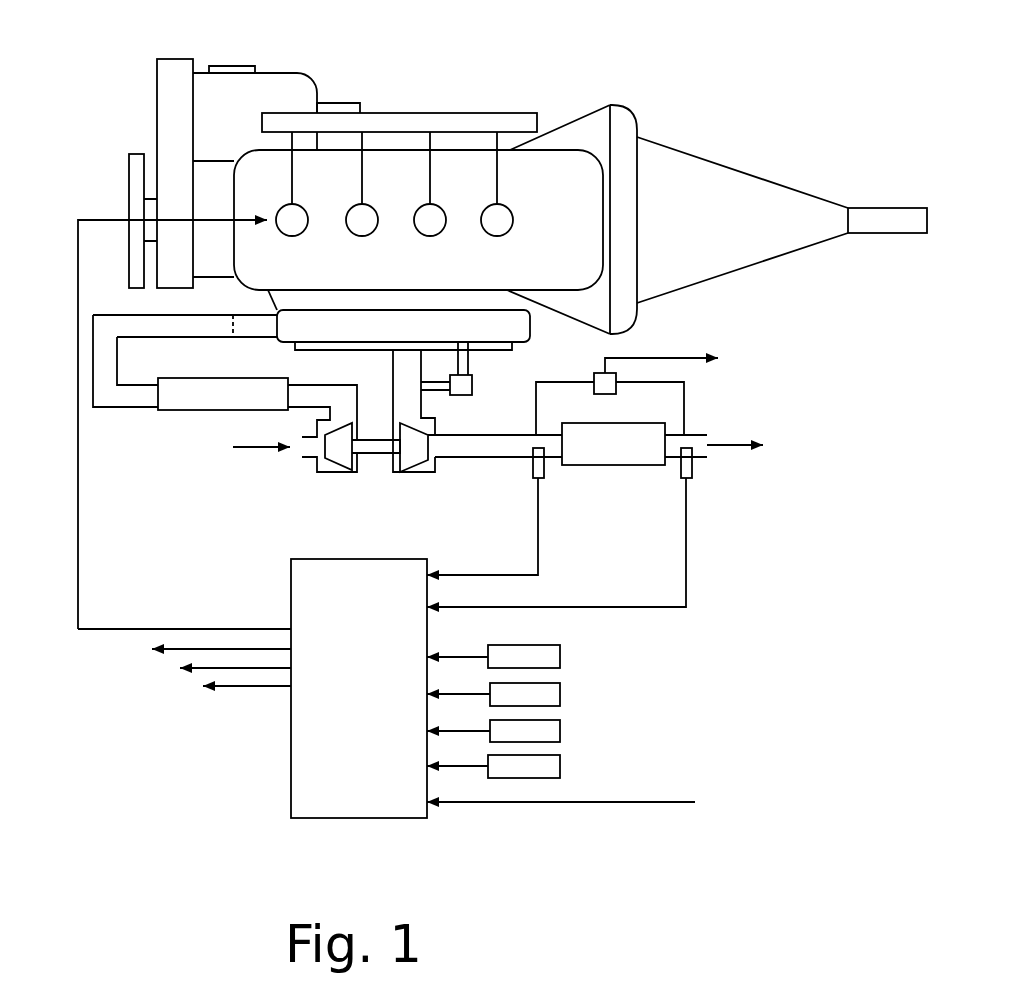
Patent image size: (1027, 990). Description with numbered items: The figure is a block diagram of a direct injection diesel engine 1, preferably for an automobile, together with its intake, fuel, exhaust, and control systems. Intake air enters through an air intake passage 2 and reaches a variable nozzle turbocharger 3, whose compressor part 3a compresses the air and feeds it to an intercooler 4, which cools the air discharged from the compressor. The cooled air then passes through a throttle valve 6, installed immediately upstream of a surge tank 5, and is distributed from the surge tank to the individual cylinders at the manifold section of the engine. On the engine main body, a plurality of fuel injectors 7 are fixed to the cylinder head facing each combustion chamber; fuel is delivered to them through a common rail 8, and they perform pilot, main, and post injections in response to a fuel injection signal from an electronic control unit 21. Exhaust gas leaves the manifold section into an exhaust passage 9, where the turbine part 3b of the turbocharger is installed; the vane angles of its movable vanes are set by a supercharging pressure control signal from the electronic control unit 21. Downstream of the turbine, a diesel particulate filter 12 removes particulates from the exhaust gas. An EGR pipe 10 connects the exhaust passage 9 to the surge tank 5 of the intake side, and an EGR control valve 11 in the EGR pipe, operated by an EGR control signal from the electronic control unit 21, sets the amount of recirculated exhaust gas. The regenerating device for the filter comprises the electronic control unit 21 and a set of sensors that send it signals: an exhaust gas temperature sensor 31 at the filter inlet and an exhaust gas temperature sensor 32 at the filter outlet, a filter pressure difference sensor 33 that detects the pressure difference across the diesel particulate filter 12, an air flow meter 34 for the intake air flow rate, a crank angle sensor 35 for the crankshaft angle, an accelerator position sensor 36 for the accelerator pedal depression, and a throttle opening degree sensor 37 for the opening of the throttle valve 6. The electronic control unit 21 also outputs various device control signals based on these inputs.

The diesel engine 1 is at (572, 81).
The air intake passage 2 is at (93, 375).
The variable nozzle turbocharger 3 is at (372, 462).
The compressor part 3a is at (337, 474).
The turbine part 3b is at (412, 473).
The intercooler 4 is at (208, 412).
The surge tank 5 is at (527, 327).
The throttle valve 6 is at (263, 317).
The fuel injectors 7 is at (302, 231).
The common rail 8 is at (465, 112).
The exhaust passage 9 is at (470, 460).
The EGR pipe 10 is at (470, 357).
The EGR control valve 11 is at (472, 390).
The diesel particulate filter 12 is at (612, 465).
The electronic control unit 21 is at (333, 559).
The exhaust gas temperature sensor 31 is at (544, 472).
The exhaust gas temperature sensor 32 is at (692, 470).
The filter pressure difference sensor 33 is at (616, 390).
The air flow meter 34 is at (560, 655).
The crank angle sensor 35 is at (560, 693).
The accelerator position sensor 36 is at (560, 730).
The throttle opening degree sensor 37 is at (560, 767).